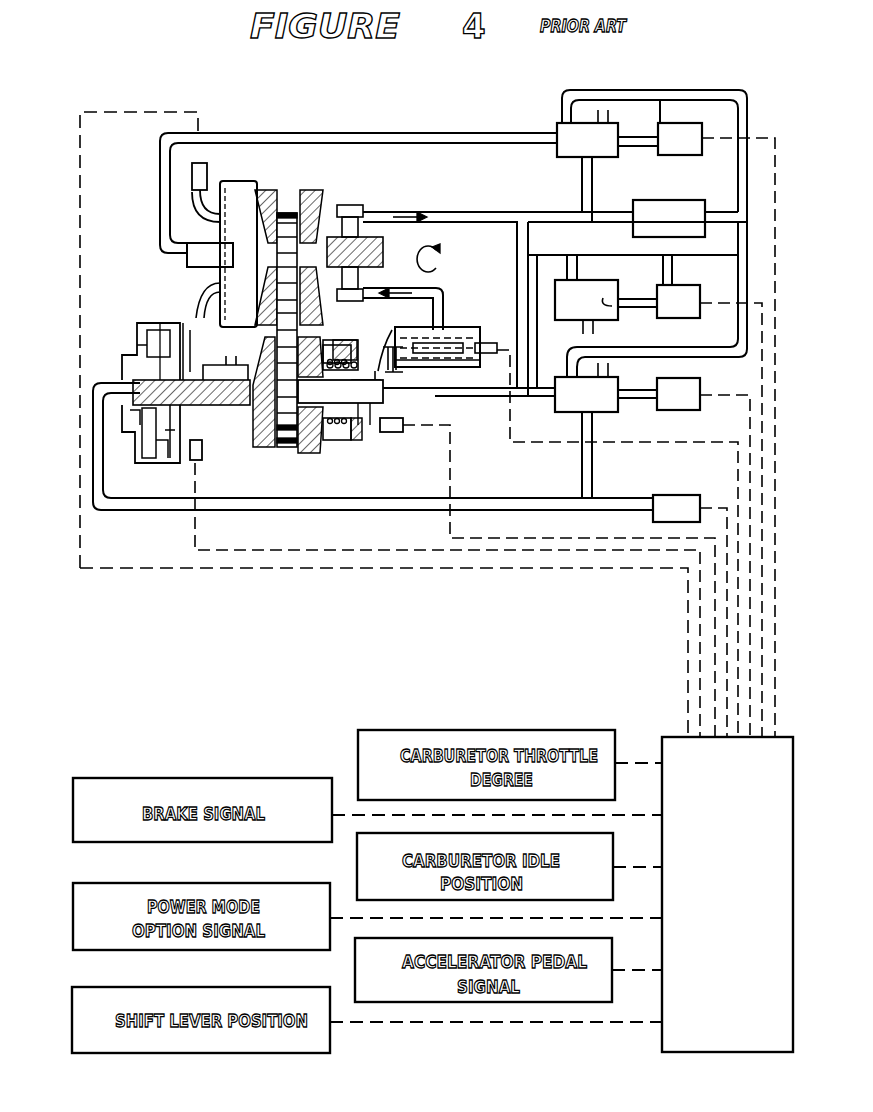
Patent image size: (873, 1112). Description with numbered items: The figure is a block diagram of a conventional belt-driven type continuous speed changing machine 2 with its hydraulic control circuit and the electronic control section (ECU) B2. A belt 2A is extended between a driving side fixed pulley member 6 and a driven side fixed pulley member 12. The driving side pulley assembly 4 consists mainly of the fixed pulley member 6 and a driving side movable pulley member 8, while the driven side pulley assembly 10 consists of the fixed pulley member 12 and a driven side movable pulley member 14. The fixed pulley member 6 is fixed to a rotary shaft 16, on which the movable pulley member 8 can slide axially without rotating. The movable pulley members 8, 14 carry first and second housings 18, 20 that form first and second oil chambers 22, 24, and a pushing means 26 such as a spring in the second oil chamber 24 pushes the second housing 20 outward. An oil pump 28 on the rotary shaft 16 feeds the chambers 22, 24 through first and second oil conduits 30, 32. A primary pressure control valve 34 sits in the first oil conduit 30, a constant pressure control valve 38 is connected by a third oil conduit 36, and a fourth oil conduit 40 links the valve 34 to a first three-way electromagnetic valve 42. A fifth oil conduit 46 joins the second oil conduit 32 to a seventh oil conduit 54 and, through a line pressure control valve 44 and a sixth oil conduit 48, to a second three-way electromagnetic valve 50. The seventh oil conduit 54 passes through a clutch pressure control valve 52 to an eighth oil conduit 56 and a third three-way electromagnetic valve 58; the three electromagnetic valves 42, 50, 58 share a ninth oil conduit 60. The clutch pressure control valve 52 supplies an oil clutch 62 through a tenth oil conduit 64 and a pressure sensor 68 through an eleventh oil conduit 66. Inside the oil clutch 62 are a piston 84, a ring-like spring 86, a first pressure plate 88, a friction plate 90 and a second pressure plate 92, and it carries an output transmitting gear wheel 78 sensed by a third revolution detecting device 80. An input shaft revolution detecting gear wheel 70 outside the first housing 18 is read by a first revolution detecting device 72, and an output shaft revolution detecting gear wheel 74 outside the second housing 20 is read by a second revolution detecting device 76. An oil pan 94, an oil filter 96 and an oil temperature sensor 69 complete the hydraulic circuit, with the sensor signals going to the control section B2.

The speed changing machine 2 is at (684, 90).
The belt 2A is at (287, 212).
The driving side pulley assembly 4 is at (185, 268).
The driving side fixed pulley member 6 is at (318, 193).
The driving side movable pulley member 8 is at (266, 190).
The driven side pulley assembly 10 is at (362, 428).
The driven side fixed pulley member 12 is at (258, 450).
The driven side movable pulley member 14 is at (302, 438).
The rotary shaft 16 is at (375, 244).
The first housing 18 is at (216, 366).
The second housing 20 is at (336, 356).
The first oil chamber 22 is at (242, 298).
The second oil chamber 24 is at (337, 443).
The pushing means 26 is at (352, 434).
The oil pump 28 is at (350, 208).
The first oil conduit 30 is at (418, 133).
The second oil conduit 32 is at (524, 222).
The primary pressure control valve 34 is at (560, 128).
The third oil conduit 36 is at (608, 222).
The constant pressure control valve 38 is at (668, 215).
The fourth oil conduit 40 is at (645, 146).
The first three-way electromagnetic valve 42 is at (688, 142).
The line pressure control valve 44 is at (606, 300).
The fifth oil conduit 46 is at (553, 288).
The sixth oil conduit 48 is at (641, 306).
The second three-way electromagnetic valve 50 is at (684, 310).
The clutch pressure control valve 52 is at (566, 385).
The seventh oil conduit 54 is at (540, 397).
The eighth oil conduit 56 is at (636, 398).
The third three-way electromagnetic valve 58 is at (688, 392).
The ninth oil conduit 60 is at (750, 112).
The oil clutch 62 is at (137, 355).
The tenth oil conduit 64 is at (276, 512).
The eleventh oil conduit 66 is at (615, 498).
The pressure sensor 68 is at (664, 506).
The oil temperature sensor 69 is at (491, 343).
The input shaft revolution detecting gear wheel 70 is at (170, 213).
The first revolution detecting device 72 is at (206, 166).
The output shaft revolution detecting gear wheel 74 is at (382, 372).
The second revolution detecting device 76 is at (404, 434).
The output transmitting gear wheel 78 is at (191, 370).
The third revolution detecting device 80 is at (204, 450).
The piston 84 is at (133, 416).
The ring-like spring 86 is at (134, 416).
The first pressure plate 88 is at (148, 460).
The friction plate 90 is at (152, 458).
The second pressure plate 92 is at (170, 460).
The oil pan 94 is at (470, 367).
The oil filter 96 is at (441, 343).
The electronic control unit B2 is at (755, 892).